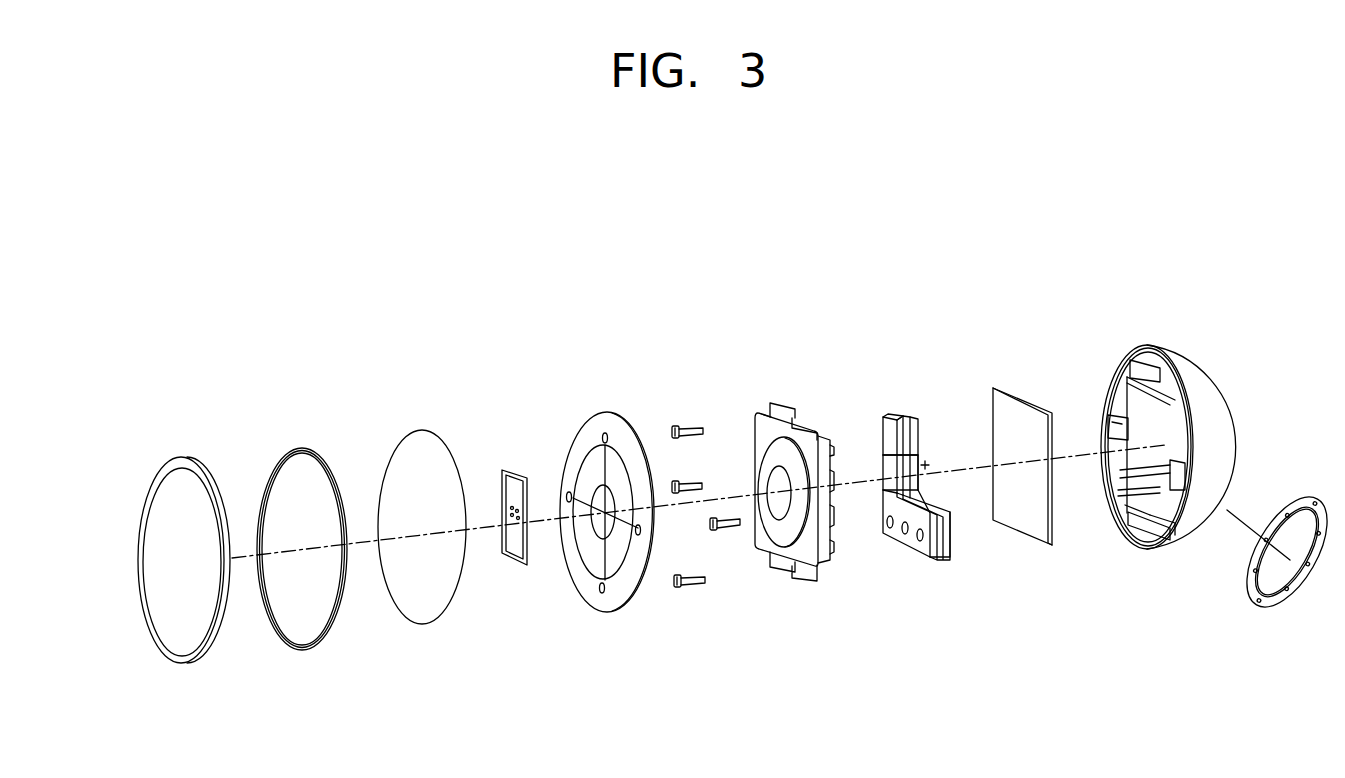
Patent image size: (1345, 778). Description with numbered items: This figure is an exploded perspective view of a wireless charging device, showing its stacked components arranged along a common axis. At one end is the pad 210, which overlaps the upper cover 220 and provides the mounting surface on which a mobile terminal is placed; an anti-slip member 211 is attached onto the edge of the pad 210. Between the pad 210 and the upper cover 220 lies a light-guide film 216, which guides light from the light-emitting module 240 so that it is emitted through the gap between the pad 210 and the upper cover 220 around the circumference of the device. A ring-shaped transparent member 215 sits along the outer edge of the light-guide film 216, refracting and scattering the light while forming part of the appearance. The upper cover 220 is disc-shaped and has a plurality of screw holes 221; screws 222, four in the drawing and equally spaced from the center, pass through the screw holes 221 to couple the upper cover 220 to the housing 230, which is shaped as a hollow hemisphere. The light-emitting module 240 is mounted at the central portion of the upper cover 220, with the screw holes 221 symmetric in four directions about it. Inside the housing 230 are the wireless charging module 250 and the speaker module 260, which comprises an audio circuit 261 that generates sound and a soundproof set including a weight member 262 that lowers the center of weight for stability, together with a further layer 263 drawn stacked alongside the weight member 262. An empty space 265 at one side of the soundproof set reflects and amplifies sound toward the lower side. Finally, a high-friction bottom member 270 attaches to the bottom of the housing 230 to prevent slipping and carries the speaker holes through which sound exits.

The pad 210 is at (172, 563).
The anti-slip member 211 is at (198, 657).
The transparent member 215 is at (310, 647).
The light-guide film 216 is at (432, 618).
The upper cover 220 is at (589, 510).
The screw holes 221 is at (638, 536).
The screws 222 is at (725, 528).
The housing 230 is at (1125, 345).
The light-emitting module 240 is at (490, 452).
The wireless charging module 250 is at (757, 400).
The speaker module 260 is at (957, 433).
The audio circuit 261 is at (1022, 443).
The weight member 262 is at (910, 416).
The layer of bracket 263 is at (900, 415).
The empty space 265 is at (926, 462).
The bottom member 270 is at (1248, 610).